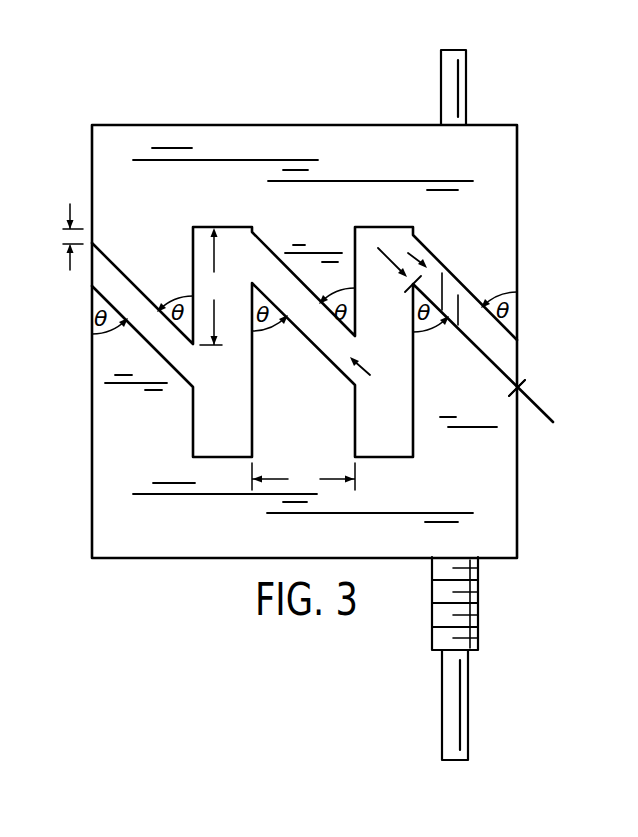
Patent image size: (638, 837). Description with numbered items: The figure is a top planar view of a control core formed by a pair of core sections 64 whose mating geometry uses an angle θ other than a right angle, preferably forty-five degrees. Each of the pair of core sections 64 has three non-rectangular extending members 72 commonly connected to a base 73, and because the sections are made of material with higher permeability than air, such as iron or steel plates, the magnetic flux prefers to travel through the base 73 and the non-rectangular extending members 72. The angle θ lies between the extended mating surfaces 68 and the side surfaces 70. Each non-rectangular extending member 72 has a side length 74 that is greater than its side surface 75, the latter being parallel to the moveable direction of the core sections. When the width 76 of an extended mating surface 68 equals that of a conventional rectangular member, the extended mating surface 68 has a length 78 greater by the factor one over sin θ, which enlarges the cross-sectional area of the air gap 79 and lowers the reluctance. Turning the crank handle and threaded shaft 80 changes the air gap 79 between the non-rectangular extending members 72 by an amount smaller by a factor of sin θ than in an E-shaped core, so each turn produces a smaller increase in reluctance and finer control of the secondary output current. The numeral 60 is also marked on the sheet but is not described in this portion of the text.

The pair of core sections 64 is at (78, 90).
The heat exchanger 60 is at (556, 0).
The base 73 is at (318, 138).
The side surfaces 70 is at (193, 237).
The side surface 75 is at (70, 204).
The non-rectangular extending members 72 is at (92, 286).
The extended mating surfaces 68 is at (138, 295).
The side length 74 is at (214, 286).
The air gap 79 is at (388, 314).
The width 76 is at (303, 478).
The length 78 is at (529, 395).
The threaded shaft 80 is at (432, 605).